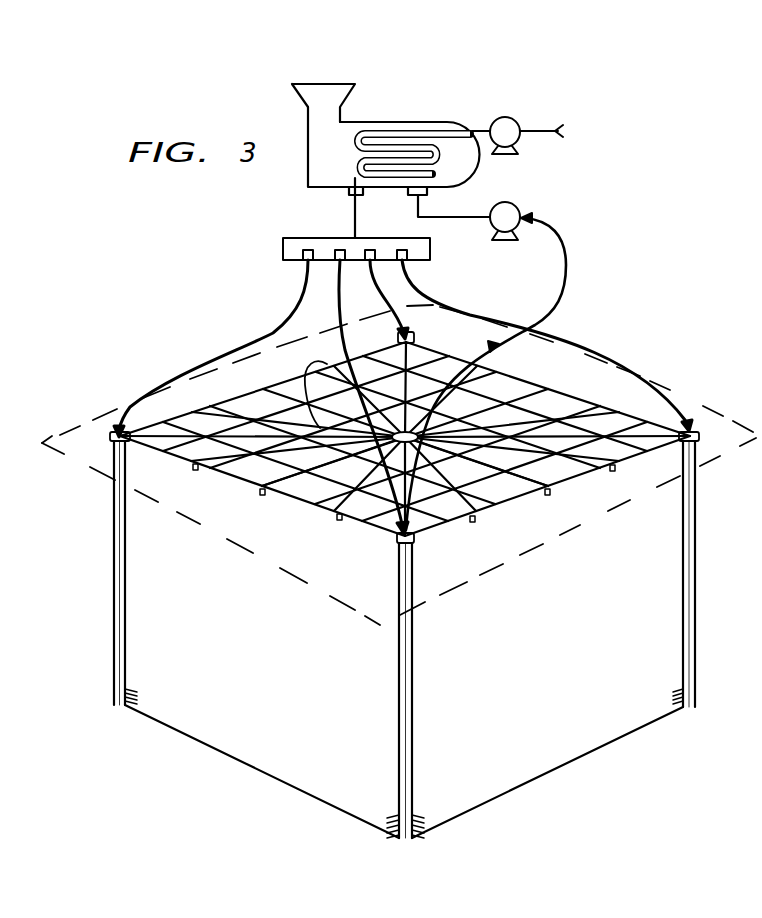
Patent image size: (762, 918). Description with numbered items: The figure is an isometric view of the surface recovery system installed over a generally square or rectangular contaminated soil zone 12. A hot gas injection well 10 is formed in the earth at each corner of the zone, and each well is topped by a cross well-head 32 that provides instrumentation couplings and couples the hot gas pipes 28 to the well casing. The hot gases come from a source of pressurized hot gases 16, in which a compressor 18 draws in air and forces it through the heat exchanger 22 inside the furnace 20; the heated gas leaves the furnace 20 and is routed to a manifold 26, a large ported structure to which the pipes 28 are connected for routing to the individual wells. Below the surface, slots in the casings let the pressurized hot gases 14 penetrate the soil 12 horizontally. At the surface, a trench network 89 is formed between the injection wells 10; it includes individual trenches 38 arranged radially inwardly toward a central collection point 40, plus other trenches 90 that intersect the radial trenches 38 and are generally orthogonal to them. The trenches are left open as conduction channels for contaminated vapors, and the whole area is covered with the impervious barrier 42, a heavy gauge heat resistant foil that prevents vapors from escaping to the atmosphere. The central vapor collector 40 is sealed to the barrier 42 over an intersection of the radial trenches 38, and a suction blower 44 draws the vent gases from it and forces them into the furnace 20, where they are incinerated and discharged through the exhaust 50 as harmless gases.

The hot gas injection well 10 is at (113, 578).
The contaminated soil zone 12 is at (284, 652).
The pressurized hot gases 14 is at (137, 695).
The source of pressurized hot gases 16 is at (488, 75).
The compressor 18 is at (512, 120).
The furnace 20 is at (416, 122).
The heat exchanger 22 is at (375, 129).
The manifold 26 is at (284, 238).
The pipes 28 is at (268, 328).
The cross well-head 32 is at (110, 438).
The trenches 38 is at (338, 524).
The central vapor collector 40 is at (404, 431).
The impervious barrier 42 is at (720, 408).
The suction blower 44 is at (519, 204).
The exhaust 50 is at (341, 83).
The trench network 89 is at (264, 403).
The other trenches 90 is at (312, 362).